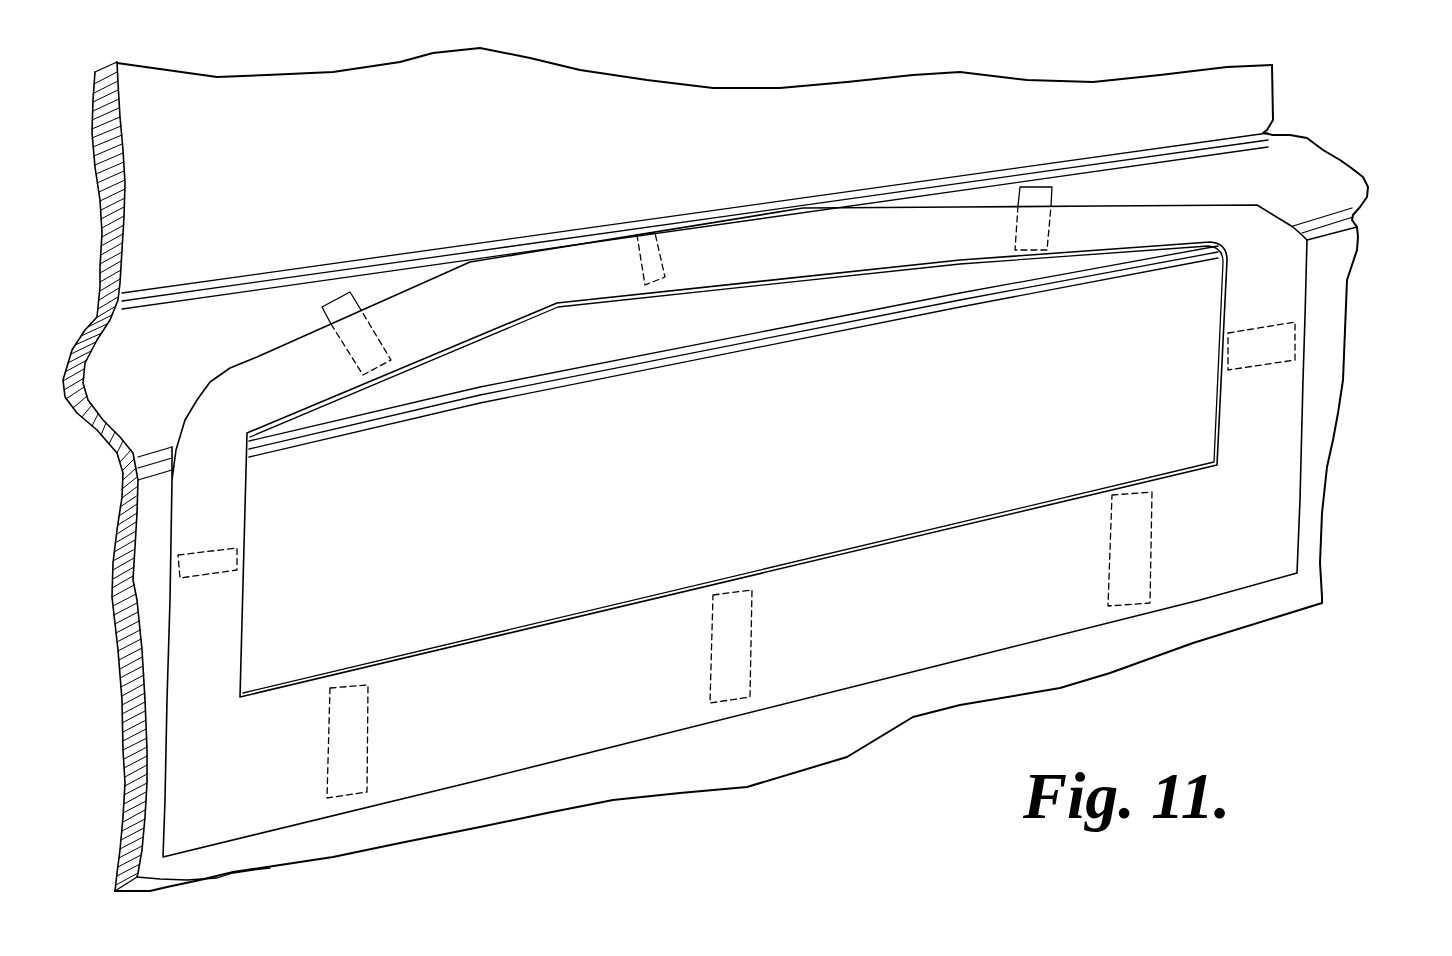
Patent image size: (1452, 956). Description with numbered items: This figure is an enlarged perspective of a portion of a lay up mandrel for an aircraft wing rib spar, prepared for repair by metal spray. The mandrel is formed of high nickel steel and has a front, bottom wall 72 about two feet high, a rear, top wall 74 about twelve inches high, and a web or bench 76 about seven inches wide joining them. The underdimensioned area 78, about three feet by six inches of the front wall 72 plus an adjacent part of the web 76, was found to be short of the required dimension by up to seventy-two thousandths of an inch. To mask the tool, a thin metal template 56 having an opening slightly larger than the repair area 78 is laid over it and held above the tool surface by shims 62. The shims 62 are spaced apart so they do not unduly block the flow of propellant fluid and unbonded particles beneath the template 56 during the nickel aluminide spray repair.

The template 56 is at (1113, 217).
The shims 62 is at (338, 302).
The front, bottom wall 72 is at (1332, 370).
The rear, top wall 74 is at (1265, 85).
The web or bench 76 is at (1338, 168).
The underdimensioned area 78 is at (875, 523).